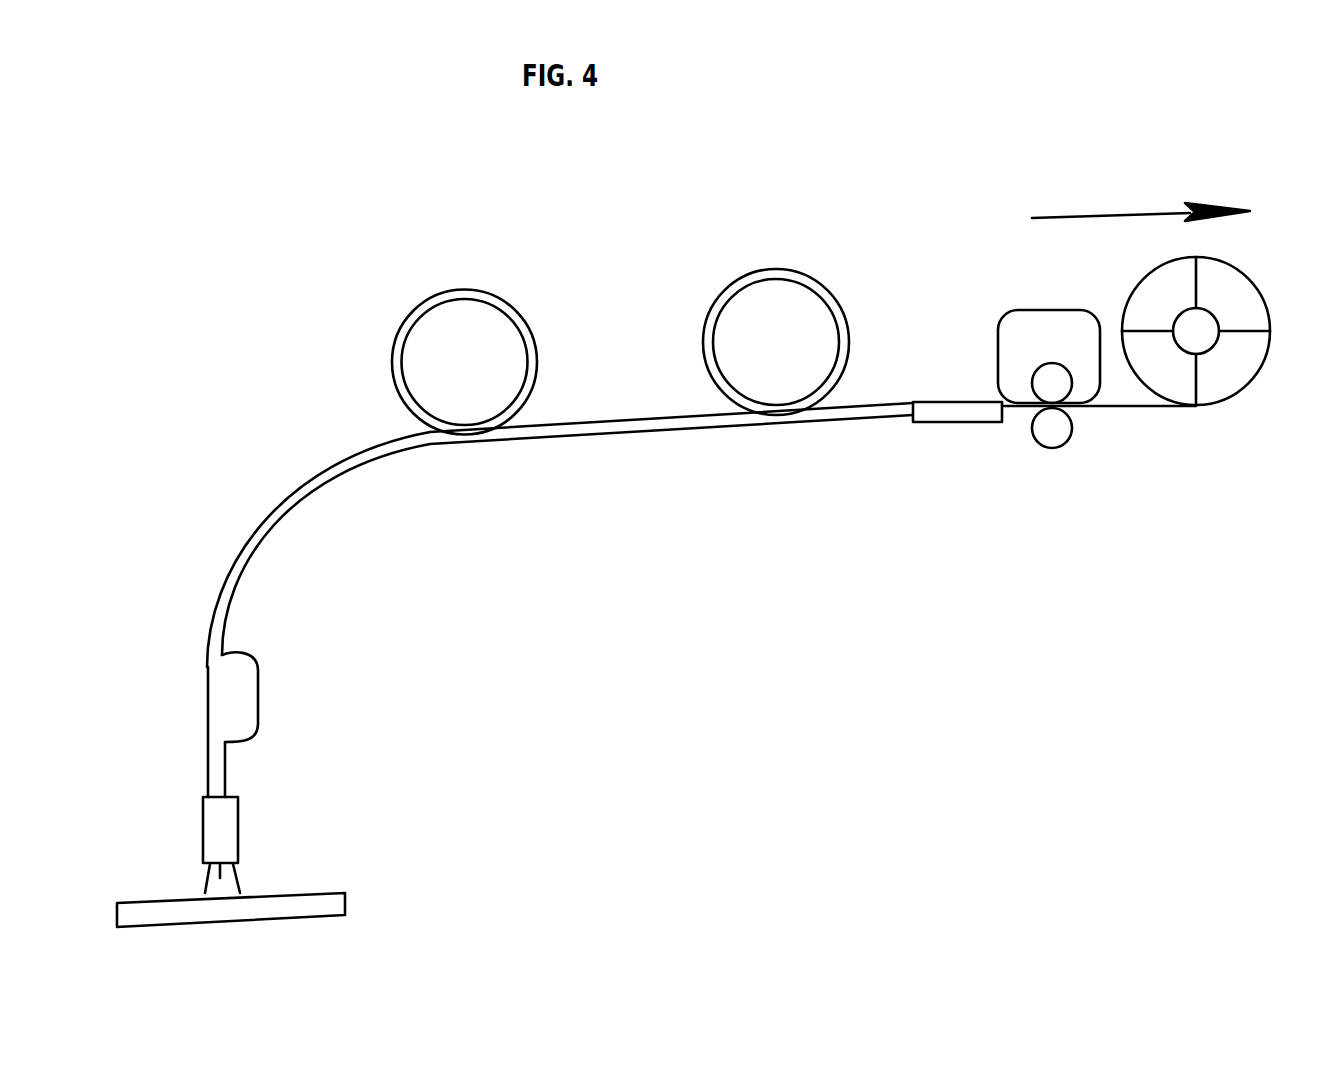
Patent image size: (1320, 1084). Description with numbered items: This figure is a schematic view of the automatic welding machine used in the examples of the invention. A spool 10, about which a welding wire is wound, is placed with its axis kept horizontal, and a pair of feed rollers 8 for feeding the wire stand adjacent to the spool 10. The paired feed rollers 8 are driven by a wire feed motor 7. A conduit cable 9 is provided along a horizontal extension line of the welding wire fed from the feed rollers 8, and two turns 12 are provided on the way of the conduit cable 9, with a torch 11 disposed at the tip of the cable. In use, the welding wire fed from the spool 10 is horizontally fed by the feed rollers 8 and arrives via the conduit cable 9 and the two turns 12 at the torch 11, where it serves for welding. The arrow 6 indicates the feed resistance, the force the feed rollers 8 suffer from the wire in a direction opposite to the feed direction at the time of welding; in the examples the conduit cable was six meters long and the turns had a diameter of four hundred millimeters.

The arrow 6 is at (1108, 212).
The wire feed motor 7 is at (1072, 324).
The feed rollers 8 is at (1060, 388).
The conduit cable 9 is at (890, 422).
The spool 10 is at (1228, 380).
The torch 11 is at (223, 830).
The turns 12 is at (530, 332).